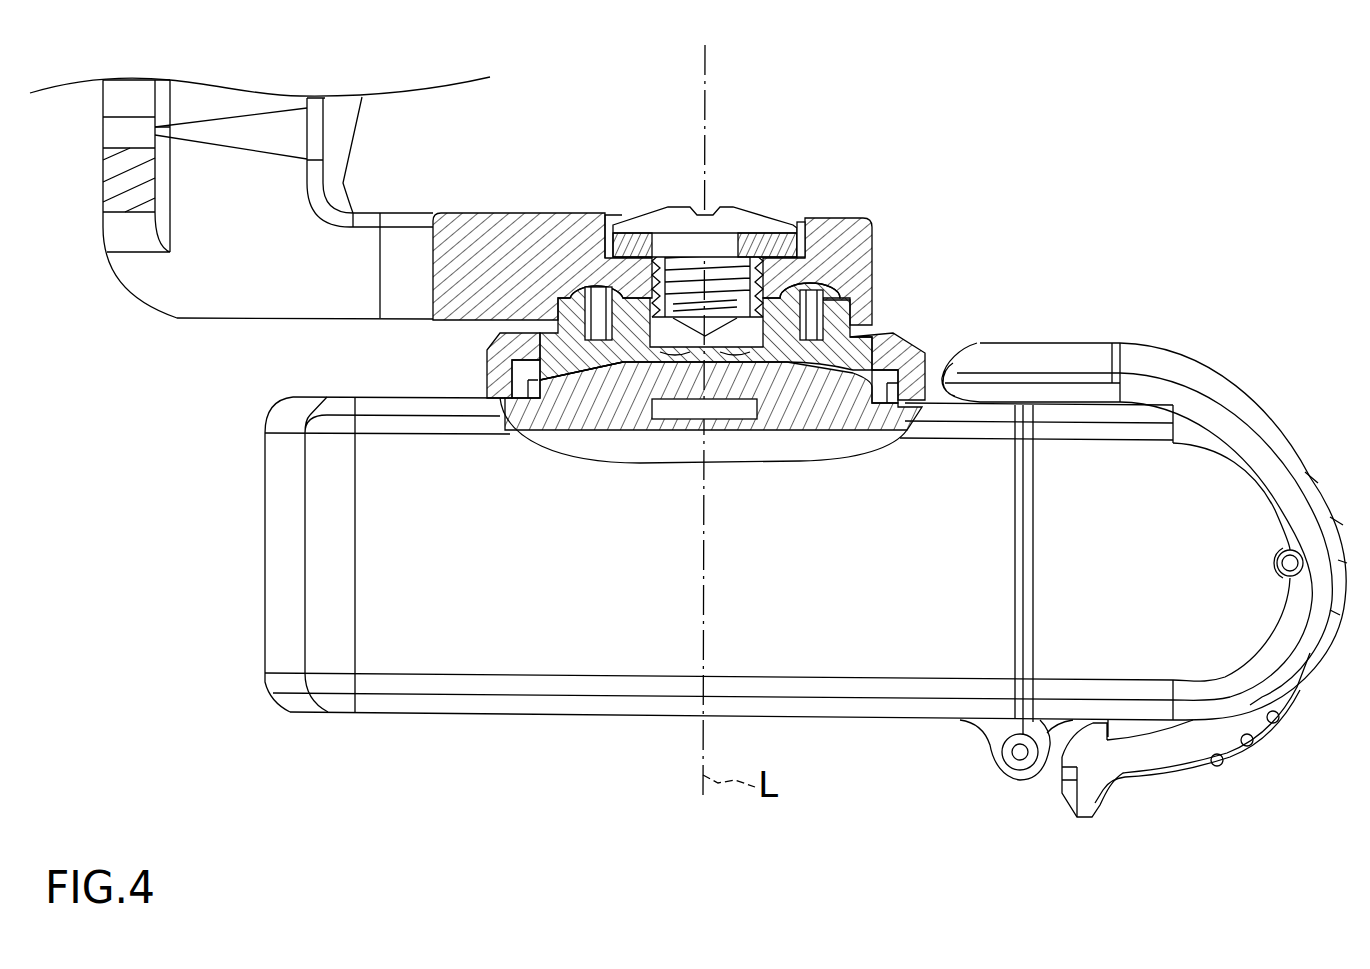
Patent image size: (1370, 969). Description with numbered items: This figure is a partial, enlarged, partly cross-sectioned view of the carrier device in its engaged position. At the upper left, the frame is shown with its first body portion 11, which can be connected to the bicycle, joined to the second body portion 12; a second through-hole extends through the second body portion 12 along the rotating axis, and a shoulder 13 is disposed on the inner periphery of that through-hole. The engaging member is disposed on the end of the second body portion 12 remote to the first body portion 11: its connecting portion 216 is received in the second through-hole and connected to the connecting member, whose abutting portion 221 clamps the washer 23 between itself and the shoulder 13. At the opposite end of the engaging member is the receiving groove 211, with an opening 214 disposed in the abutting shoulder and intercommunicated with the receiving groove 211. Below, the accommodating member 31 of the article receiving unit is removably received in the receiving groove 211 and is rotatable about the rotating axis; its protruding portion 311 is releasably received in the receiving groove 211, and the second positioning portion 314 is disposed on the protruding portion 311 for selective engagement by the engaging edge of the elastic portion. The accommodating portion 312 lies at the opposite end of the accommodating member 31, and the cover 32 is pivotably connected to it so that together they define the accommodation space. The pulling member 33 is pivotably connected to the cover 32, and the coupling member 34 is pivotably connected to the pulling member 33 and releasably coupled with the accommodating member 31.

The first body portion 11 is at (205, 105).
The second body portion 12 is at (535, 230).
The shoulder 13 is at (850, 266).
The receiving groove 211 is at (893, 355).
The opening 214 is at (523, 373).
The connecting portion 216 is at (653, 233).
The abutting portion 221 is at (755, 221).
The washer 23 is at (795, 243).
The accommodating member 31 is at (719, 592).
The protruding portion 311 is at (542, 416).
The accommodating portion 312 is at (497, 665).
The second positioning portion 314 is at (557, 372).
The cover 32 is at (1195, 467).
The pulling member 33 is at (1173, 753).
The coupling member 34 is at (1037, 363).